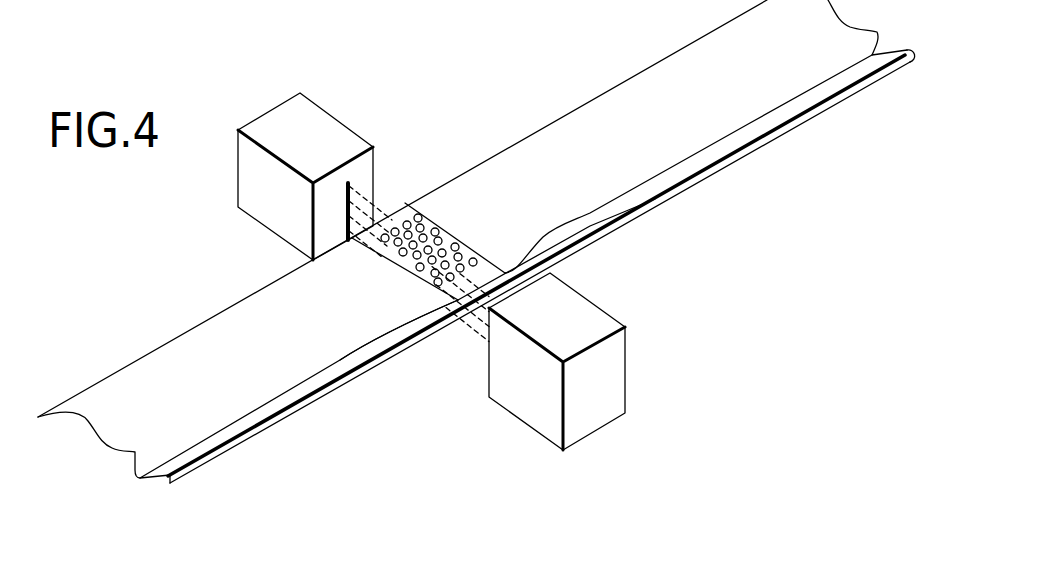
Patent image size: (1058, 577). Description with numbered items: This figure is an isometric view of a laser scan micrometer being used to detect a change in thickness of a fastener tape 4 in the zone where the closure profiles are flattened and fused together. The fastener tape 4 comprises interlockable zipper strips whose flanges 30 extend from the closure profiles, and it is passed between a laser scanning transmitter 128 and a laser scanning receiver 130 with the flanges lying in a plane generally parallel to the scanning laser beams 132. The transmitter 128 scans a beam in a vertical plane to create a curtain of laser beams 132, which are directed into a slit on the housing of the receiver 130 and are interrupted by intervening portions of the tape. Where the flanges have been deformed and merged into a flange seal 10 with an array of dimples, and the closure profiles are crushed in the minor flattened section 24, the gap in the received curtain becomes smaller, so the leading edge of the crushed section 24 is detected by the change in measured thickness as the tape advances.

The fastener tape 4 is at (740, 169).
The flange seal 10 is at (407, 200).
The flattened surface 24 is at (458, 306).
The flange 30 is at (177, 363).
The laser scanning transmitter 128 is at (650, 351).
The laser scanning receiver 130 is at (352, 108).
The scanning laser beams 132 is at (470, 331).